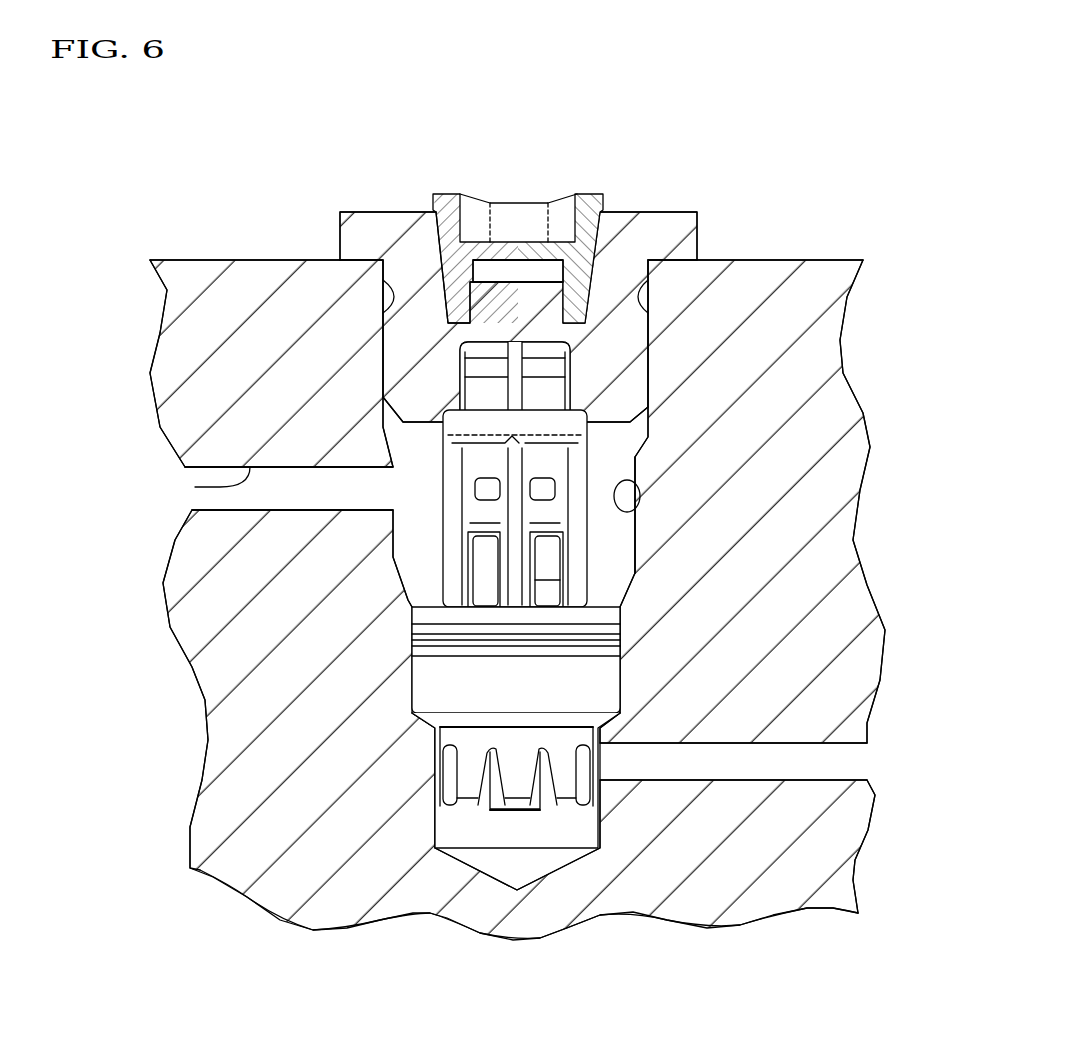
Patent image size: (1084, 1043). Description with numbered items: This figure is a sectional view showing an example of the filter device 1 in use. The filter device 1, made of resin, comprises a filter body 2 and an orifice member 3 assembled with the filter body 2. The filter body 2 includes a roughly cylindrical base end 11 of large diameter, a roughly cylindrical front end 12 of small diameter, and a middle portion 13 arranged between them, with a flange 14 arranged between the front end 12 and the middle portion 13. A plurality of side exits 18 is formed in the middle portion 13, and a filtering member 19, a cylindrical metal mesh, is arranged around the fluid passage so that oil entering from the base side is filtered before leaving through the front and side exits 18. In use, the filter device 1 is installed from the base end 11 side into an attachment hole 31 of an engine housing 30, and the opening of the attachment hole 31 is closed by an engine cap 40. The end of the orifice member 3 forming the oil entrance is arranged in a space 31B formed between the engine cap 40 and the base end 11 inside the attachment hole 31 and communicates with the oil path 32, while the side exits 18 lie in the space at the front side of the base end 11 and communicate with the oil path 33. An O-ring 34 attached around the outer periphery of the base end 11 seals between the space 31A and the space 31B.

The filter device 1 is at (429, 466).
The filter body 2 is at (422, 617).
The orifice member 3 is at (497, 807).
The base end 11 is at (427, 672).
The front end 12 is at (533, 340).
The middle portion 13 is at (453, 558).
The flange 14 is at (437, 378).
The side exits 18 is at (558, 583).
The filtering member 19 is at (547, 555).
The engine housing 30 is at (772, 258).
The attachment hole 31 is at (637, 481).
The space 31A is at (563, 824).
The space 31B is at (616, 545).
The oil path 32 is at (777, 744).
The oil path 33 is at (250, 468).
The O-ring 34 is at (620, 638).
The engine cap 40 is at (410, 210).